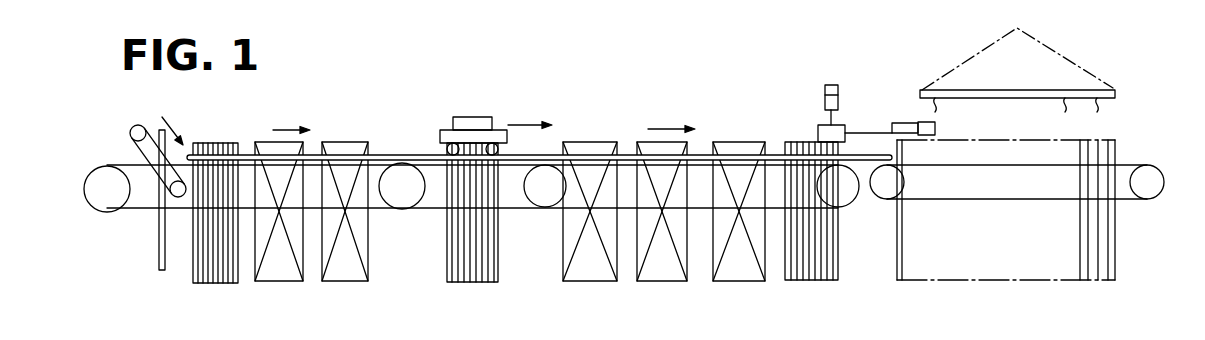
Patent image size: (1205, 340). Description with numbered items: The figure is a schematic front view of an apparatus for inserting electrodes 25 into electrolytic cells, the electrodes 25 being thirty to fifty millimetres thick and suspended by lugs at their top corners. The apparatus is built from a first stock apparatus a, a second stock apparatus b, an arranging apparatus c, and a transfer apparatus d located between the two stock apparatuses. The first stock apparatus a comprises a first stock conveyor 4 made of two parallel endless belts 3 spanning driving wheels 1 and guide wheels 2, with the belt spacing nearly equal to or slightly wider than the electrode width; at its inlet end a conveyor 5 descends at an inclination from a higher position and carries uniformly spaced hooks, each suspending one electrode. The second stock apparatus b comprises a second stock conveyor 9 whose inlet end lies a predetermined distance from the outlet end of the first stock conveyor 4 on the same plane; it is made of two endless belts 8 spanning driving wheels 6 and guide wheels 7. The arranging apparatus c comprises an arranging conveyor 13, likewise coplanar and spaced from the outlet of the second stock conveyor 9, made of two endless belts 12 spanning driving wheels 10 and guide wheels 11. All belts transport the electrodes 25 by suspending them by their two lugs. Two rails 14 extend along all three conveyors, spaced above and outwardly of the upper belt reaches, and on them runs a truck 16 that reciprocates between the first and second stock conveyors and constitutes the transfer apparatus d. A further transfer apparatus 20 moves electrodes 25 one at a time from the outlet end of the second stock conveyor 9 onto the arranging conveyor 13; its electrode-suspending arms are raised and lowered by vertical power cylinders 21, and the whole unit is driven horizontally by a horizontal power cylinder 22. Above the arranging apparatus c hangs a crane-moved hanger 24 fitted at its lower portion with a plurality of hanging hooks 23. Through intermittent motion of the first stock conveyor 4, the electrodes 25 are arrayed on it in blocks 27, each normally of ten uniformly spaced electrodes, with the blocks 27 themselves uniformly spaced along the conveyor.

The driving wheels 1 is at (403, 220).
The supply roll 2 is at (103, 199).
The endless belts 3 is at (311, 218).
The first stock conveyor 4 is at (312, 145).
The conveyor 5 is at (138, 145).
The driving wheels 6 is at (845, 199).
The guide wheels 7 is at (545, 206).
The endless belts 8 is at (700, 209).
The second stock conveyor 9 is at (625, 248).
The driving wheels 10 is at (1155, 176).
The guide wheels 11 is at (885, 196).
The endless belts 12 is at (1132, 163).
The arranging conveyor 13 is at (1007, 208).
The rails 14 is at (545, 155).
The truck 16 is at (478, 116).
The transfer apparatus 20 is at (907, 87).
The vertical power cylinders 21 is at (832, 85).
The horizontal power cylinder 22 is at (935, 128).
The hanging hooks 23 is at (1101, 108).
The hanger 24 is at (1040, 72).
The electrodes 25 is at (159, 240).
The blocks 27 is at (212, 292).
The first stock apparatus a is at (247, 139).
The second stock apparatus b is at (702, 152).
The arranging apparatus c is at (973, 291).
The transfer apparatus d is at (458, 107).